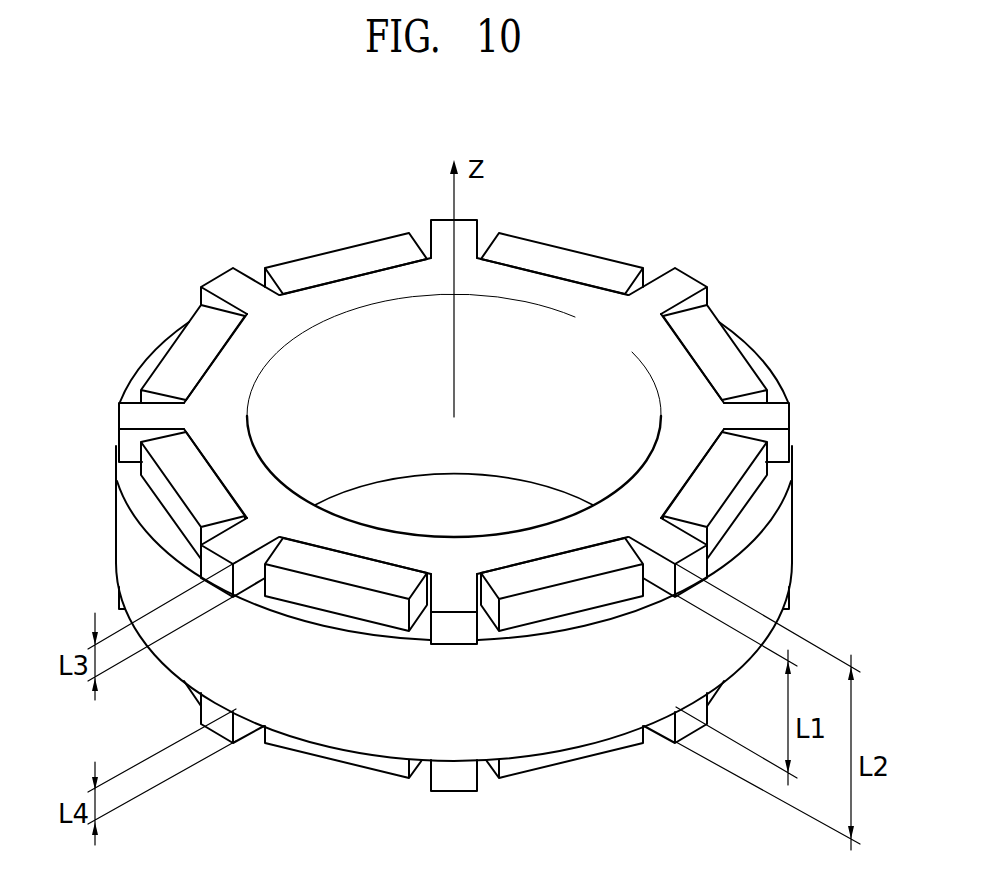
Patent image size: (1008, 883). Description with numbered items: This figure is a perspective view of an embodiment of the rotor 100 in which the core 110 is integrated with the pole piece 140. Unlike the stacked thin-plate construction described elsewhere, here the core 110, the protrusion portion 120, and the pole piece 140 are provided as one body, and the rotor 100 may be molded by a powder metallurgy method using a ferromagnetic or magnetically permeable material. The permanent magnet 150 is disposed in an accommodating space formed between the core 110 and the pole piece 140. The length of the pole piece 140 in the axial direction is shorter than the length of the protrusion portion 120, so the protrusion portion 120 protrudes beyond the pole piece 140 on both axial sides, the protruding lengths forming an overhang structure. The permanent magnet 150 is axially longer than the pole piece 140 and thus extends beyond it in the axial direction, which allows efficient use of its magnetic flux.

The rotor 100 is at (418, 475).
The core 110 is at (232, 380).
The protrusion portion 120 is at (193, 563).
The pole piece 140 is at (317, 705).
The permanent magnet 150 is at (370, 600).